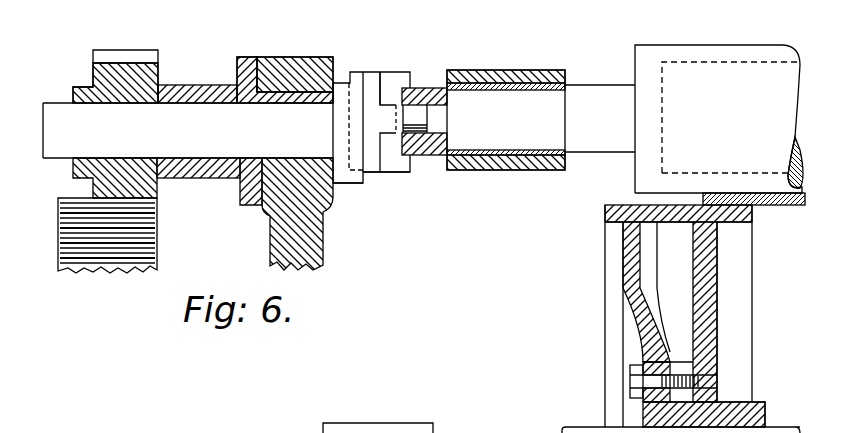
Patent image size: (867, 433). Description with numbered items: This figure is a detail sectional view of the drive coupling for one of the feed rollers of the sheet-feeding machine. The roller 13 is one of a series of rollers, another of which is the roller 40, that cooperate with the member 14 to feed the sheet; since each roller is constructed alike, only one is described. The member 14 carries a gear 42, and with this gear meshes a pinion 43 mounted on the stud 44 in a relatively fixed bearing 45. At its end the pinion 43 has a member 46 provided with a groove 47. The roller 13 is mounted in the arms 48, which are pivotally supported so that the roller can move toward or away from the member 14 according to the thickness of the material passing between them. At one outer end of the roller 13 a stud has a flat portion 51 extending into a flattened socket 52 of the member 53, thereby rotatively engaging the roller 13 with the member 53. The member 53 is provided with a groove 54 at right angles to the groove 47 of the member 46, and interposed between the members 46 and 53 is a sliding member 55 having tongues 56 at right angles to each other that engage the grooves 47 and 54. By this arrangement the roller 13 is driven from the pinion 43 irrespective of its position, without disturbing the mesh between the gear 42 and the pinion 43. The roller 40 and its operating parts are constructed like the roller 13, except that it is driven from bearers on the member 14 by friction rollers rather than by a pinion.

The roller 13 is at (720, 125).
The roller 40 is at (729, 117).
The member 14 is at (755, 332).
The gear 42 is at (113, 276).
The pinion 43 is at (127, 53).
The stud 44 is at (203, 125).
The bearing 45 is at (300, 57).
The member 46 is at (343, 185).
The groove 47 is at (345, 90).
The arms 48 is at (547, 170).
The flat portion 51 is at (413, 112).
The flattened socket 52 is at (436, 136).
The member 53 is at (407, 173).
The groove 54 is at (388, 172).
The sliding member 55 is at (373, 173).
The tongues 56 is at (380, 135).